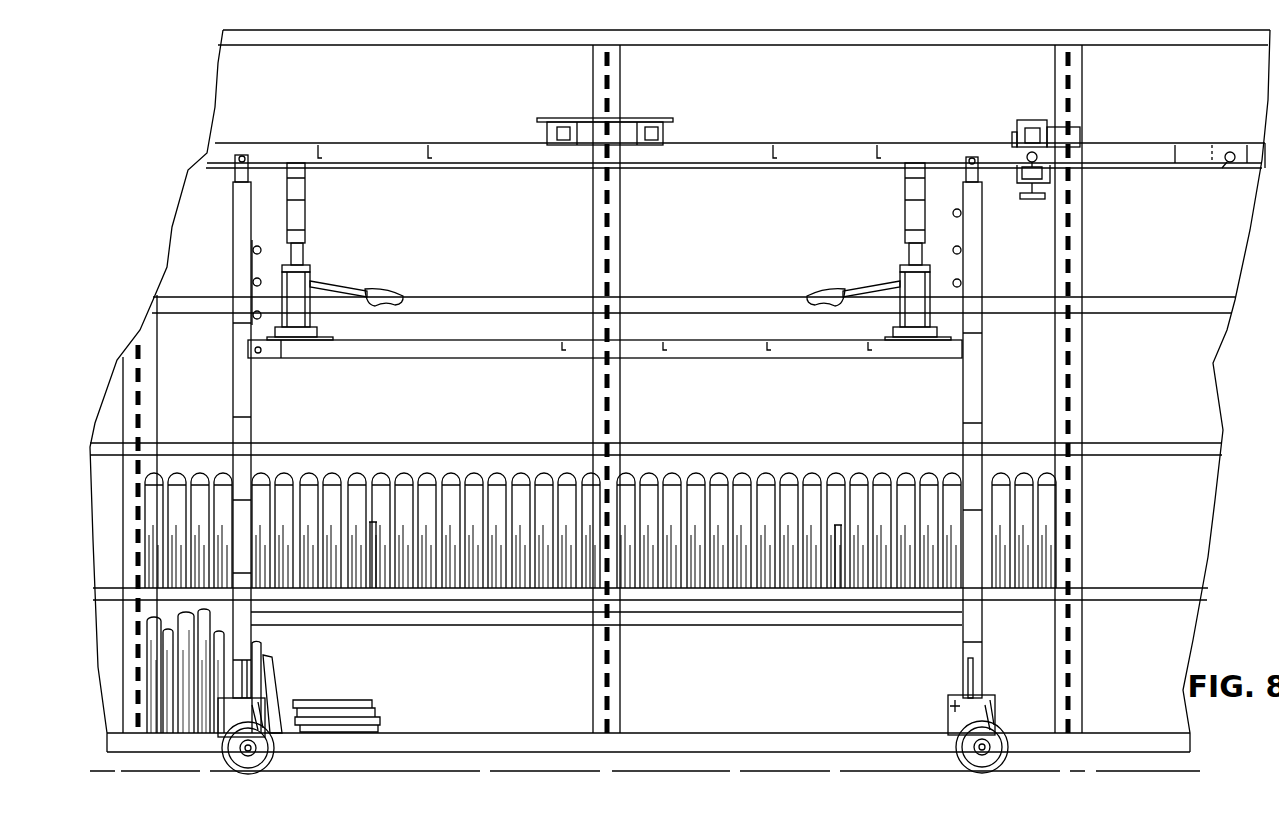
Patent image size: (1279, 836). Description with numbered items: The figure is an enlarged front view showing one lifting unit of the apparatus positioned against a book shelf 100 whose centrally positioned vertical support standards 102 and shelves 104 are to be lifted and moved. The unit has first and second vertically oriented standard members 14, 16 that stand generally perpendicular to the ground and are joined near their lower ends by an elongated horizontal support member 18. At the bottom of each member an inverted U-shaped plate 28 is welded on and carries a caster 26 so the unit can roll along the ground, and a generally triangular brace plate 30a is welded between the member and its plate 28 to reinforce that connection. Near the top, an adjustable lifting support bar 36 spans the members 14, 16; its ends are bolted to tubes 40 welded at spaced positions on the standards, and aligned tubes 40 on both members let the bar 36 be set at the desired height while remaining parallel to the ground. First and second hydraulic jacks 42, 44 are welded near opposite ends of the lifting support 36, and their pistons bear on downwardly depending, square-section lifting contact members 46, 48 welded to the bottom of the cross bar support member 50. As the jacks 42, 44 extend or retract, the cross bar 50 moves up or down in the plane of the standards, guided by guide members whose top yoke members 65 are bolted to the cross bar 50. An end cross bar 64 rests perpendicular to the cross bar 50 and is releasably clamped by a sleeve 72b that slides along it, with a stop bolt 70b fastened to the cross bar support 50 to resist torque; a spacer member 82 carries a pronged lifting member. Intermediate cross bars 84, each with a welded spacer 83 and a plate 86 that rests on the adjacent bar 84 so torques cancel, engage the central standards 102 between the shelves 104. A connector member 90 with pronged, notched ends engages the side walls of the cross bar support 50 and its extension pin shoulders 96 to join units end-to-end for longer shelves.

The book shelf 100 is at (1222, 584).
The vertical support standards 102 is at (158, 383).
The shelves 104 is at (455, 170).
The cross bar support member 50 is at (830, 145).
The connector member 90 is at (1145, 143).
The spacer 83 is at (622, 130).
The plate 86 is at (547, 118).
The intermediate cross bar 84 is at (547, 135).
The end cross bar 64 is at (1017, 130).
The sleeve 72b is at (1030, 120).
The spacer member 82 is at (1082, 135).
The stop bolt 70b is at (1033, 202).
The shoulders 96 is at (1226, 162).
The first member 14 is at (251, 448).
The second member 16 is at (982, 412).
The tube 40 is at (253, 252).
The yoke member 65 is at (236, 170).
The lifting contact member 46 is at (306, 200).
The lifting contact member 48 is at (905, 200).
The first hydraulic jack 42 is at (311, 322).
The second hydraulic jack 44 is at (899, 305).
The lifting support bar 36 is at (733, 360).
The horizontal support member 18 is at (775, 622).
The inverted U-shaped plate 28 is at (960, 715).
The brace plate 30a is at (975, 677).
The caster 26 is at (1006, 753).